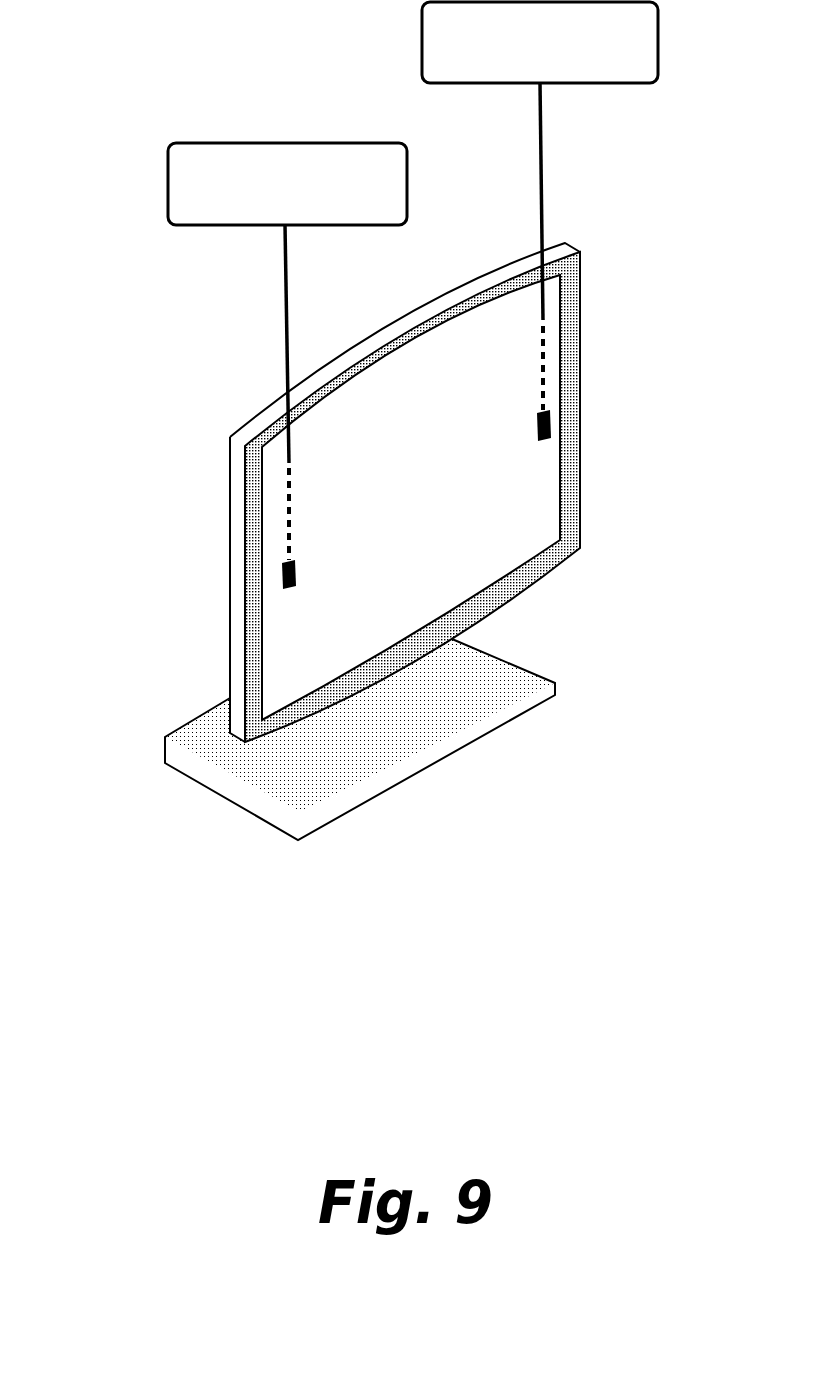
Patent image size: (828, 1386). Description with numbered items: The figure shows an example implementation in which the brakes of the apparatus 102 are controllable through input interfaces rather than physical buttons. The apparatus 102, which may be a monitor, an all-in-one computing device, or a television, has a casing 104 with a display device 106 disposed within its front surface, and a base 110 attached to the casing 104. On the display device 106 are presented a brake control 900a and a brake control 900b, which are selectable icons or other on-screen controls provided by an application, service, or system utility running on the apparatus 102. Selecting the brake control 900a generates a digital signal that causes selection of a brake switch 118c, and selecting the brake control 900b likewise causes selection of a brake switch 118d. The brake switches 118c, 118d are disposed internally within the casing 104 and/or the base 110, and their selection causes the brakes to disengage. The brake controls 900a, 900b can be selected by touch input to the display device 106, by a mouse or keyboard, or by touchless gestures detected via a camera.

The apparatus 102 is at (210, 327).
The casing 104 is at (417, 330).
The display device 106 is at (437, 555).
The base 110 is at (197, 740).
The brake switch 118c is at (390, 200).
The brake switch 118d is at (643, 57).
The brake control 900a is at (282, 572).
The brake control 900b is at (552, 425).